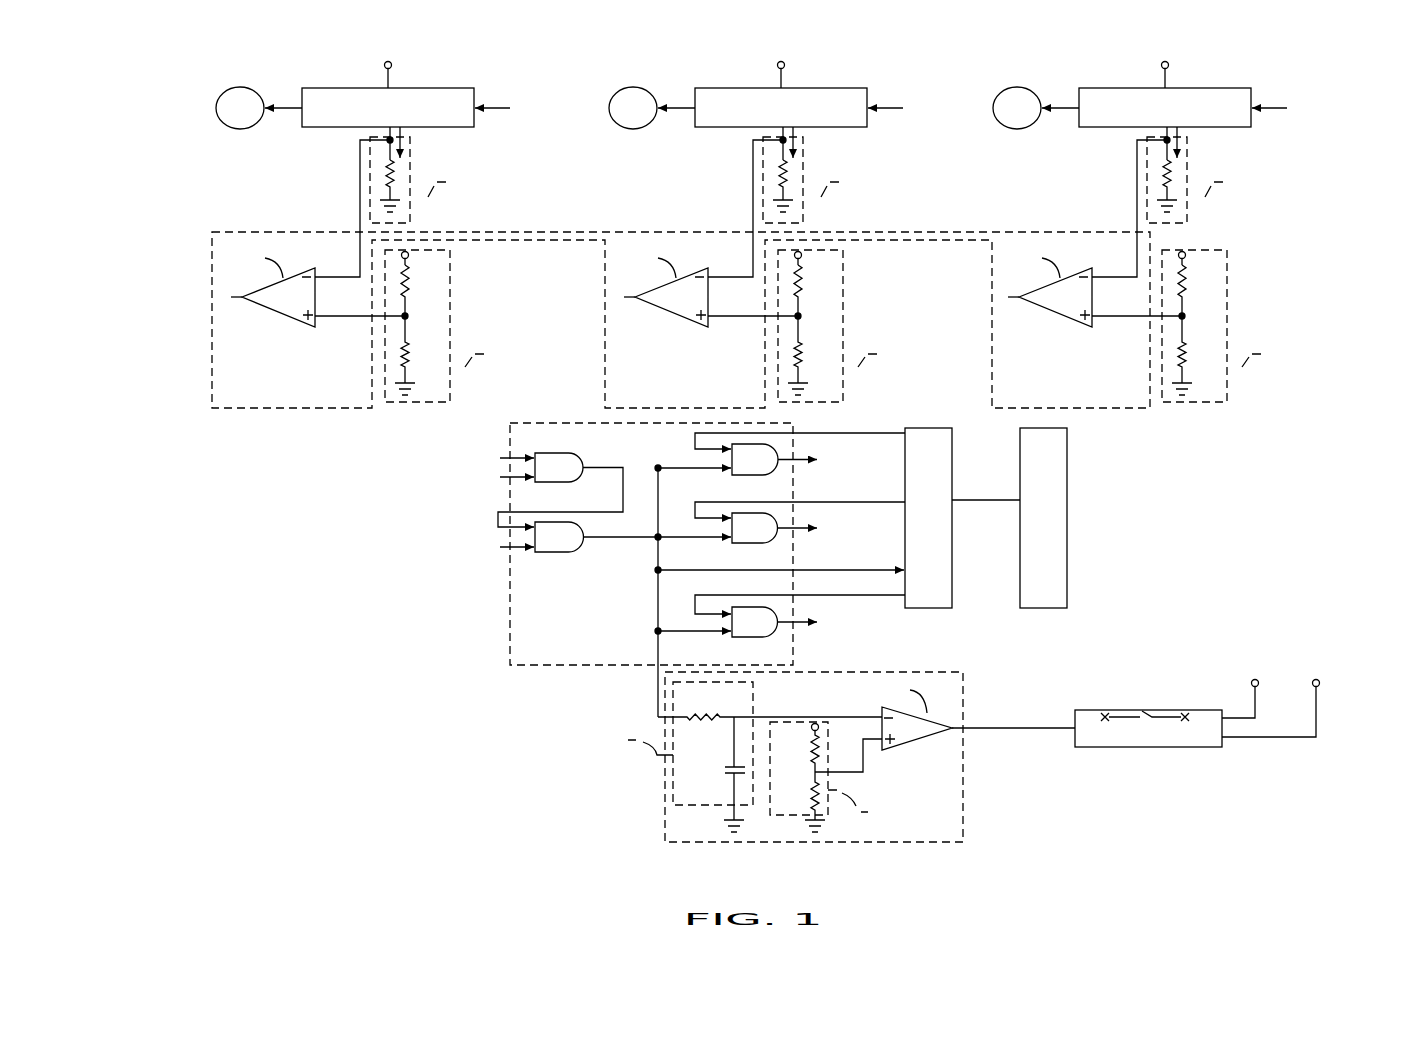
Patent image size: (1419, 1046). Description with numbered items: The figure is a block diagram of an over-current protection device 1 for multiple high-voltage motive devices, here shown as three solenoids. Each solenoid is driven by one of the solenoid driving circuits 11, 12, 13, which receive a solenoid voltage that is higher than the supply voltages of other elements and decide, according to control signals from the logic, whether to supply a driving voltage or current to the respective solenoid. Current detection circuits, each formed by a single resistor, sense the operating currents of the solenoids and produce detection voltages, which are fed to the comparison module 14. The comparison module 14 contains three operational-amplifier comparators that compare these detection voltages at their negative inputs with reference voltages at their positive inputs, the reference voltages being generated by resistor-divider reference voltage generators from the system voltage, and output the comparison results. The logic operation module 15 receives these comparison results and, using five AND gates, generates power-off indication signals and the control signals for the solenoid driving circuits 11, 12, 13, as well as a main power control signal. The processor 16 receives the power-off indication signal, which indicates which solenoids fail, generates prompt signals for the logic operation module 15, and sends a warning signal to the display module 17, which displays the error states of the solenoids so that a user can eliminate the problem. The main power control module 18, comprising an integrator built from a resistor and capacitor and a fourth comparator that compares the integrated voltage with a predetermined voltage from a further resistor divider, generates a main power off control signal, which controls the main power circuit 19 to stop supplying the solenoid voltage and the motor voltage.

The over-current protection device 1 is at (1208, 886).
The solenoid driving circuit 11 is at (324, 87).
The solenoid driving circuit 12 is at (778, 83).
The solenoid driving circuit 13 is at (1162, 83).
The comparison module 14 is at (1068, 231).
The logic operation module 15 is at (510, 614).
The processor 16 is at (952, 585).
The display module 17 is at (1067, 580).
The main power control module 18 is at (963, 682).
The main power circuit 19 is at (1163, 747).